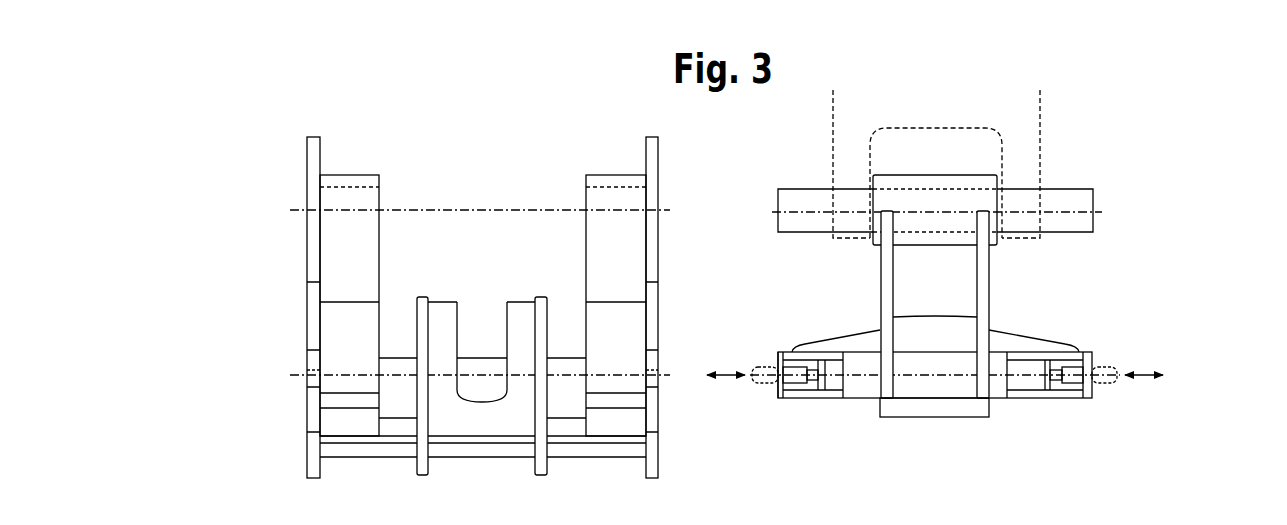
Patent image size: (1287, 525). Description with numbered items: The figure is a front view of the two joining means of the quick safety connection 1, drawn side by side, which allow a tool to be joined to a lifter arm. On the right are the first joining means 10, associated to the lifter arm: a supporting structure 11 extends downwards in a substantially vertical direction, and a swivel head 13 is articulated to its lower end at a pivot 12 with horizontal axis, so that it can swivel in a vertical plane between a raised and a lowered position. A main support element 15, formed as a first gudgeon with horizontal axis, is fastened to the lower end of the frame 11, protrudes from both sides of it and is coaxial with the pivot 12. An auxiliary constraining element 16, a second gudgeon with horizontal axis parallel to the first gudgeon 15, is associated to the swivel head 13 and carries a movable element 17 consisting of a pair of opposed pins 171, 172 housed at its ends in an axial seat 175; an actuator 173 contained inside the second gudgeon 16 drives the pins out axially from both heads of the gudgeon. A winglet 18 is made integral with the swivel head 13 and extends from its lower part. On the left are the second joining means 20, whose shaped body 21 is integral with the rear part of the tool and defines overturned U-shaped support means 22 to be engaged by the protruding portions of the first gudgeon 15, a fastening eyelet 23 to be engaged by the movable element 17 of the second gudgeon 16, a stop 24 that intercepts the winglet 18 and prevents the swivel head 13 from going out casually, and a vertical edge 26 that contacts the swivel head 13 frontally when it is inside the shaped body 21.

The quick safety connection 1 is at (1160, 115).
The first joining means 10 is at (1175, 268).
The supporting structure 11 is at (1040, 127).
The pivot 12 is at (947, 212).
The swivel head 13 is at (983, 288).
The main support element 15 is at (803, 203).
The auxiliary constraining element 16 is at (825, 390).
The movable element 17 is at (763, 395).
The pin 171 is at (792, 372).
The pin 172 is at (1075, 380).
The actuator 173 is at (1020, 383).
The axial seat 175 is at (763, 438).
The winglet 18 is at (930, 412).
The second joining means 20 is at (232, 258).
The shaped body 21 is at (492, 157).
The support means 22 is at (350, 178).
The fastening eyelet 23 is at (312, 376).
The stop 24 is at (522, 310).
The vertical edge 26 is at (400, 402).